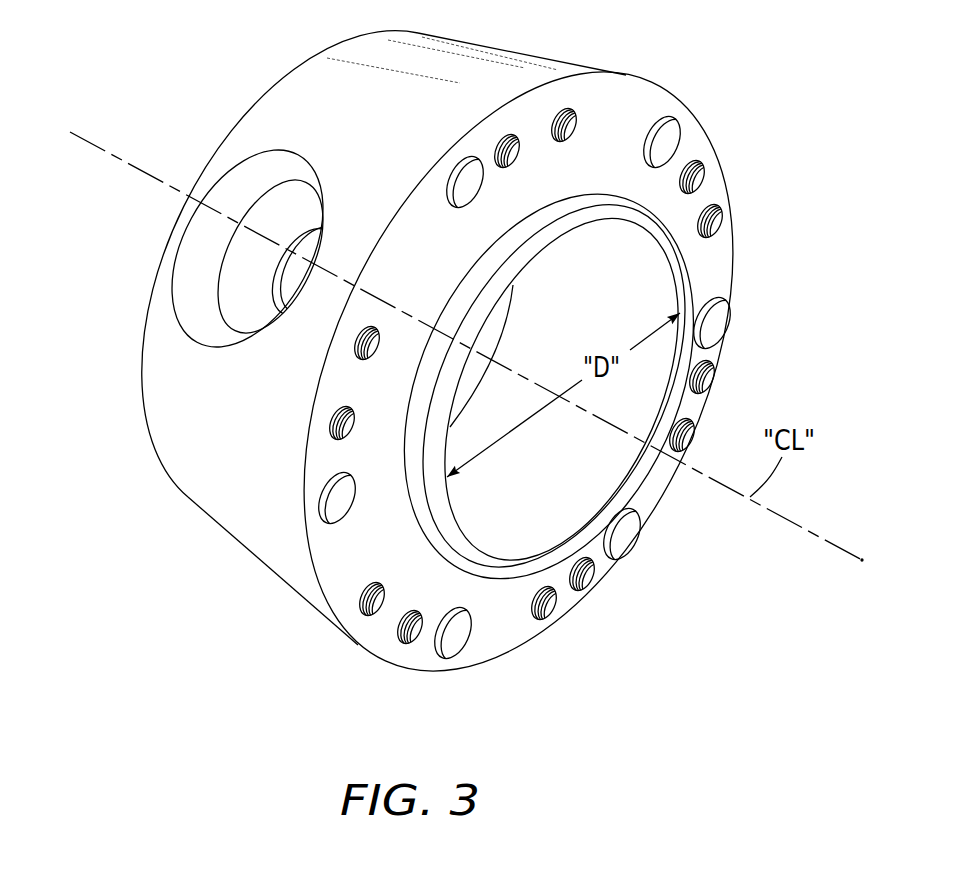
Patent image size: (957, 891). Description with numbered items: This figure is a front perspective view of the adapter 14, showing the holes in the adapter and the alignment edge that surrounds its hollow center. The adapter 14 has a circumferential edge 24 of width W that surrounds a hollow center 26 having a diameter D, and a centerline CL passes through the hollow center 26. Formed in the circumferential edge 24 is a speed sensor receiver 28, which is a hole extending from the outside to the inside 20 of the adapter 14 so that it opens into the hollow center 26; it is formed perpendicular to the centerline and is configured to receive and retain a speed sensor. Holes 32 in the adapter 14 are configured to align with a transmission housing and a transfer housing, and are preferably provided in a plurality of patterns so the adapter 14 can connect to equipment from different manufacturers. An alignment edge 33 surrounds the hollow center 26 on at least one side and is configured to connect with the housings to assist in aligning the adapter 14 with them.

The adapter 14 is at (167, 417).
The inside 20 is at (543, 487).
The circumferential edge 24 is at (658, 83).
The hollow center 26 is at (543, 360).
The speed sensor receiver 28 is at (195, 258).
The holes 32 is at (488, 175).
The alignment edge 33 is at (423, 515).